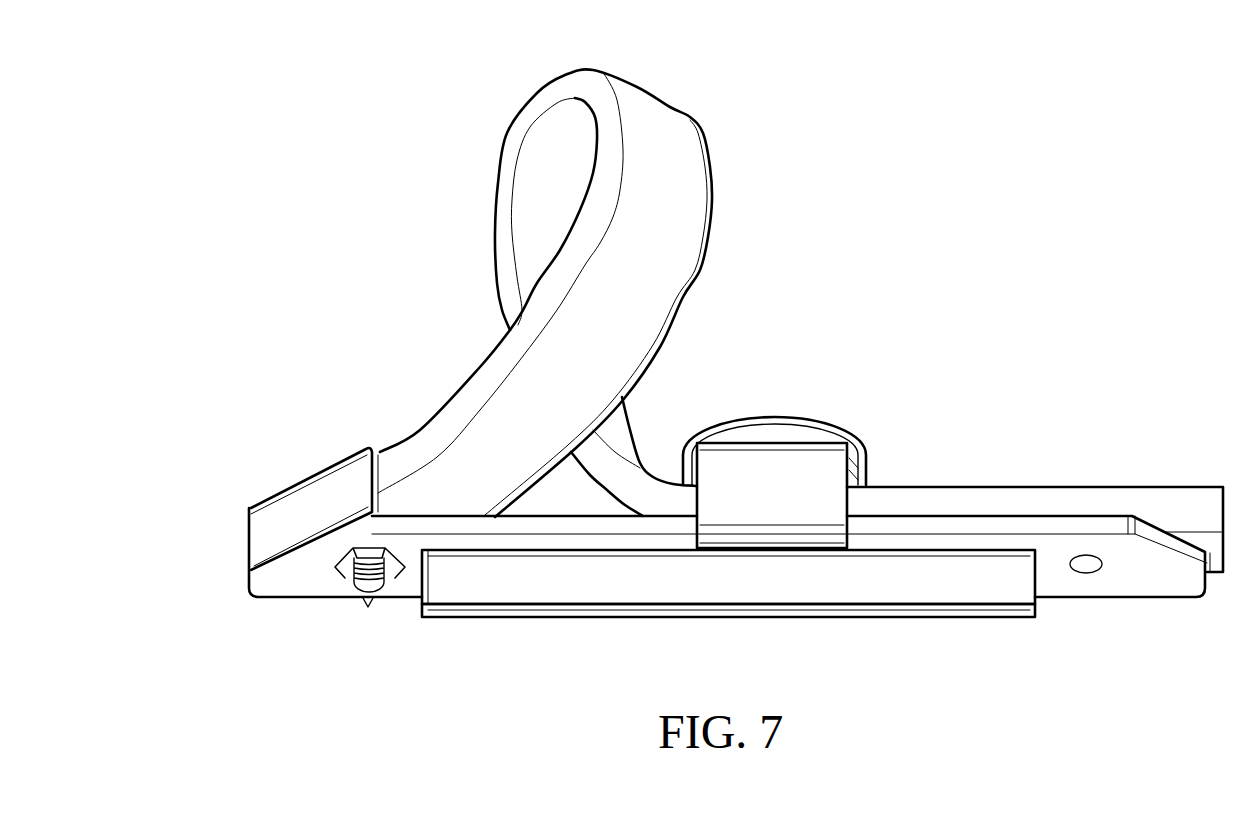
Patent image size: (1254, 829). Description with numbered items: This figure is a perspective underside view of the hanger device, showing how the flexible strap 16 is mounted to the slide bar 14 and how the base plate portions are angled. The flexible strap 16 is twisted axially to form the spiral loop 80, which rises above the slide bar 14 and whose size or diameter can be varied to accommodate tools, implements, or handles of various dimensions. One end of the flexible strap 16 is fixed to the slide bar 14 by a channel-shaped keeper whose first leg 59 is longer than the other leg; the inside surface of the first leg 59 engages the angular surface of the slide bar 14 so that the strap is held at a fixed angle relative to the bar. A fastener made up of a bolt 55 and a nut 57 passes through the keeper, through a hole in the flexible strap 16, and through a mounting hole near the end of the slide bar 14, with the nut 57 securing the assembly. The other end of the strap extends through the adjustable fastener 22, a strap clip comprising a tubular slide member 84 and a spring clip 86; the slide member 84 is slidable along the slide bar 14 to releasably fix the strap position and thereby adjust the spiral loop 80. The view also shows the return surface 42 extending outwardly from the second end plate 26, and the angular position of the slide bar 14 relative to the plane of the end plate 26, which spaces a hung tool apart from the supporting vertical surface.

The slide bar 14 is at (1163, 578).
The flexible strap 16 is at (1085, 497).
The adjustable fastener 22 is at (807, 408).
The second end plate 26 is at (1020, 615).
The return surface 42 is at (838, 589).
The bolt 55 is at (367, 600).
The nut 57 is at (345, 577).
The first leg 59 is at (283, 521).
The spiral loop 80 is at (735, 168).
The slide member 84 is at (813, 472).
The spring clip 86 is at (860, 433).